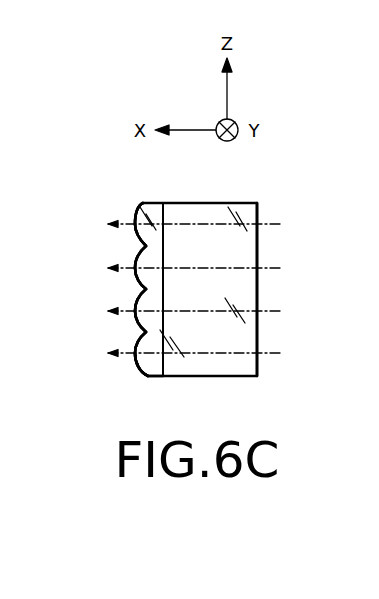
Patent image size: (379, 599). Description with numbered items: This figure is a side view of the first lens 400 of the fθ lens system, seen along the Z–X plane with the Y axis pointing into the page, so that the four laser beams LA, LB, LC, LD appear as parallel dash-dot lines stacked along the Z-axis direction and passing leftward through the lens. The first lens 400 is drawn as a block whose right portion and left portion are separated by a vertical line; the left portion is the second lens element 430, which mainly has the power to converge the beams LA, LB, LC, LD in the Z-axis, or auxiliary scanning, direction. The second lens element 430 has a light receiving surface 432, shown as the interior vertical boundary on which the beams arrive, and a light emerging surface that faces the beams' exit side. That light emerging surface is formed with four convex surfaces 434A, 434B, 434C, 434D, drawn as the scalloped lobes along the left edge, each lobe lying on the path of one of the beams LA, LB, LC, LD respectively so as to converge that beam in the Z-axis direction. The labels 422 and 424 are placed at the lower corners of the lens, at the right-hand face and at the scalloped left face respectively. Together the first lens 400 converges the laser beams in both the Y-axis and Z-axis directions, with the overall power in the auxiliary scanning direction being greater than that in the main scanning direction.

The first lens 400 is at (274, 179).
The exit surface 422 is at (259, 364).
The incident surface 424 is at (160, 361).
The second lens element 430 is at (137, 222).
The light receiving surface 432 is at (172, 233).
The convex surface 434A is at (136, 343).
The convex surface 434B is at (136, 299).
The convex surface 434C is at (137, 258).
The convex surface 434D is at (137, 220).
The laser beam LA is at (281, 353).
The laser beam LB is at (281, 311).
The laser beam LC is at (281, 268).
The laser beam LD is at (281, 224).